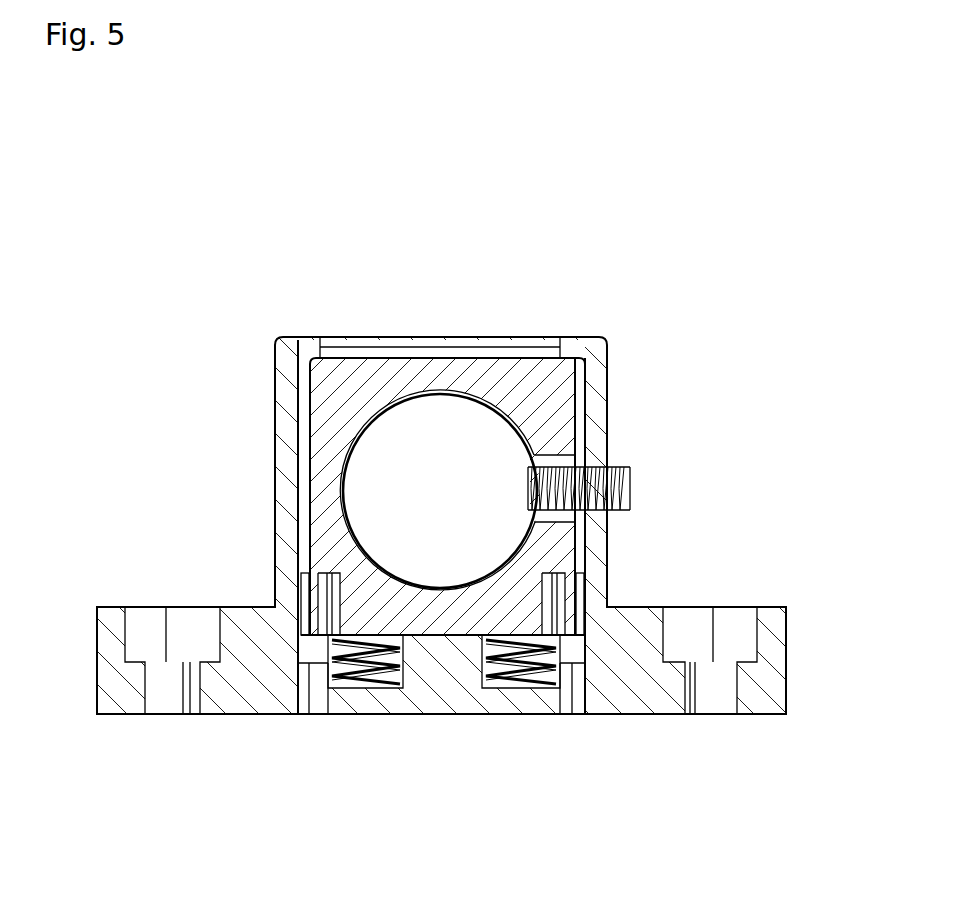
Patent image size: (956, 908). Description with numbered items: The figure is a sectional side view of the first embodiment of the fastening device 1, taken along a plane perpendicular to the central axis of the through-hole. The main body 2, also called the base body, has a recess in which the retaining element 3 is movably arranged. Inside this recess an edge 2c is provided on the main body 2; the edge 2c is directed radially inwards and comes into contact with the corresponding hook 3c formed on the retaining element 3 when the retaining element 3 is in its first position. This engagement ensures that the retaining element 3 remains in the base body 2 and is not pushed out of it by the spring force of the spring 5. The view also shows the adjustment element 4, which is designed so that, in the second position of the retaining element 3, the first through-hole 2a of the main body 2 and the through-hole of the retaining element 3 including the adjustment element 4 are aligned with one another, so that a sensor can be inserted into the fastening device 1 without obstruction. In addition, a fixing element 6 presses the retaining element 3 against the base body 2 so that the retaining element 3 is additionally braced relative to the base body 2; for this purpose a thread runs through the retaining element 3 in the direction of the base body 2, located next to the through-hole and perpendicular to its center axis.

The fastening device 1 is at (578, 302).
The main body 2 is at (628, 585).
The first through-hole 2a is at (343, 453).
The edge 2c is at (578, 572).
The retaining element 3 is at (377, 368).
The hook 3c is at (302, 607).
The adjustment element 4 is at (433, 590).
The spring 5 is at (523, 690).
The fixing element 6 is at (555, 467).